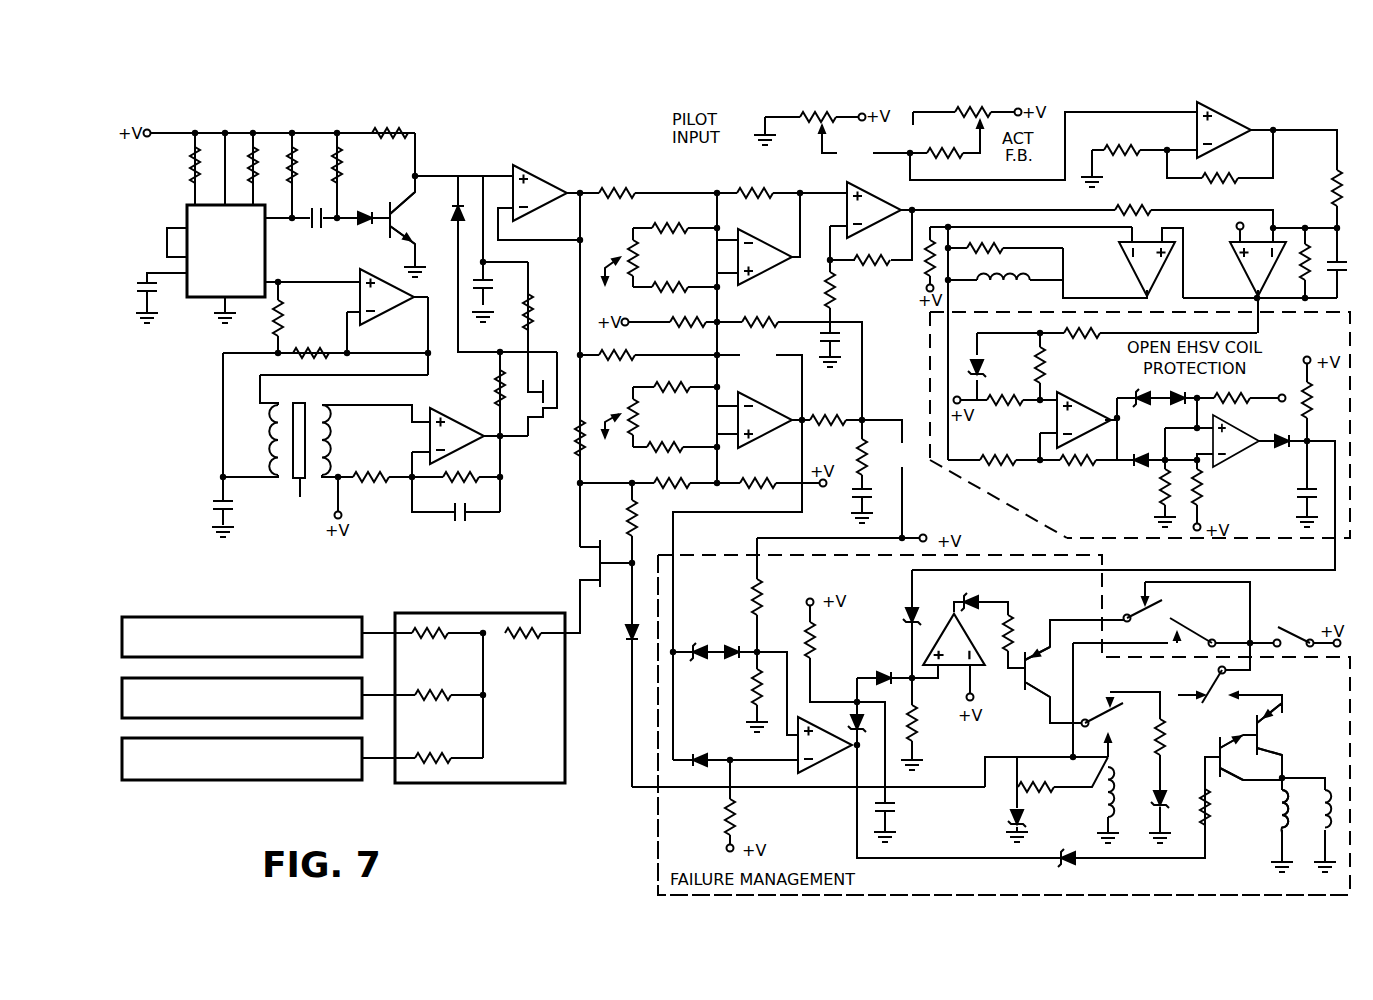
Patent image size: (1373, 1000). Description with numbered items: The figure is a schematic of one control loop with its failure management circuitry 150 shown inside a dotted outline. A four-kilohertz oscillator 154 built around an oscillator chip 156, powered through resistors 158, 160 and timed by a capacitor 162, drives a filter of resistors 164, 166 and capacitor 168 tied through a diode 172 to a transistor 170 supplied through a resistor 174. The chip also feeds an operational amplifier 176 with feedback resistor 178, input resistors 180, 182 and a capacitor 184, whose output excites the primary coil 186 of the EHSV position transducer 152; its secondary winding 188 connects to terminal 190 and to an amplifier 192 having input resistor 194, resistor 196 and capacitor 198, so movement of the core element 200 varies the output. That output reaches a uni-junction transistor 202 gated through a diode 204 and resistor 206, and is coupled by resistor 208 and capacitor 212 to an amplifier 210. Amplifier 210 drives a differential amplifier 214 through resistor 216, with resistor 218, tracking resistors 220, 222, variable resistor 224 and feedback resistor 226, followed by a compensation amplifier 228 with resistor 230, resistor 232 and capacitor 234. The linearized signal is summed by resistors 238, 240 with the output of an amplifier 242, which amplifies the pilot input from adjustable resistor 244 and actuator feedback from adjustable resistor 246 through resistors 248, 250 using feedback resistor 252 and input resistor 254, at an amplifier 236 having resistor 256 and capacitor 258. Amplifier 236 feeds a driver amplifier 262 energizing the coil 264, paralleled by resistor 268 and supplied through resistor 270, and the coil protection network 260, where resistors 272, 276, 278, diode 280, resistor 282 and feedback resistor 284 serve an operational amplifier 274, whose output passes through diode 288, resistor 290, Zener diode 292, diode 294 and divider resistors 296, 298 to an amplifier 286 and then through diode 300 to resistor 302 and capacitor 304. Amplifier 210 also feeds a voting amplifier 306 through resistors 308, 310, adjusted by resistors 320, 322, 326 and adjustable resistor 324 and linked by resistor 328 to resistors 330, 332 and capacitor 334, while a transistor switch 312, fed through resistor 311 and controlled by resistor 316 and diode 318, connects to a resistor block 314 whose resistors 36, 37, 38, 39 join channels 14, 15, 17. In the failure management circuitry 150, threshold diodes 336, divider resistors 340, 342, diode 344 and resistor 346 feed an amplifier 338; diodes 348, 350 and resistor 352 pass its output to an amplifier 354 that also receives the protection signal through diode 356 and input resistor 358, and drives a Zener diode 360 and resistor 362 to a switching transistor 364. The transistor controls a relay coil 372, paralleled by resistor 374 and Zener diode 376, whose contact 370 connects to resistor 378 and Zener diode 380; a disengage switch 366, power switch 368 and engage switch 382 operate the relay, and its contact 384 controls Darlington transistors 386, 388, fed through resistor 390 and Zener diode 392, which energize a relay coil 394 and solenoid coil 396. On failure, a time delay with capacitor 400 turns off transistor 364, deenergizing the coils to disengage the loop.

The failure management circuitry 150 is at (658, 828).
The electrohydraulic servo valve position transducer 152 is at (280, 496).
The 4-kilohertz oscillator 154 is at (270, 128).
The oscillator chip 156 is at (197, 300).
The resistor 158 is at (190, 170).
The resistor 160 is at (253, 150).
The capacitor 162 is at (147, 280).
The resistor 164 is at (295, 160).
The resistor 166 is at (340, 160).
The capacitor 168 is at (316, 230).
The transistor 170 is at (392, 212).
The diode 172 is at (365, 205).
The resistor 174 is at (392, 130).
The operational amplifier 176 is at (387, 236).
The feedback resistor 178 is at (397, 316).
The input resistor 180 is at (320, 339).
The input resistor 182 is at (282, 315).
The capacitor 184 is at (218, 500).
The primary coil 186 is at (272, 433).
The secondary winding 188 is at (326, 435).
The terminal 190 is at (342, 517).
The operational amplifier 192 is at (451, 415).
The input resistor 194 is at (371, 475).
The resistor 196 is at (483, 463).
The capacitor 198 is at (455, 524).
The core element 200 is at (307, 403).
The uni-junction transistor 202 is at (552, 435).
The diode 204 is at (460, 200).
The resistor 206 is at (497, 386).
The resistor 208 is at (531, 306).
The operational amplifier 210 is at (546, 180).
The capacitor 212 is at (492, 278).
The differential amplifier 214 is at (768, 243).
The input resistor 216 is at (613, 189).
The input resistor 218 is at (690, 326).
The resistor 220 is at (672, 225).
The resistor 222 is at (672, 284).
The variable resistor 224 is at (630, 245).
The resistor 226 is at (757, 188).
The amplifier 228 is at (880, 206).
The feedback resistor 230 is at (869, 257).
The resistor 232 is at (836, 300).
The capacitor 234 is at (845, 340).
The amplifier 236 is at (1246, 270).
The resistor 238 is at (1150, 208).
The resistor 240 is at (1334, 190).
The amplifier 242 is at (1232, 128).
The adjustable resistor 244 is at (771, 140).
The adjustable resistor 246 is at (966, 116).
The resistor 248 is at (836, 120).
The resistor 250 is at (948, 157).
The feedback resistor 252 is at (1218, 175).
The input resistor 254 is at (1122, 145).
The resistor 256 is at (1300, 250).
The capacitor 258 is at (1333, 280).
The electrohydraulic servo valve coil protection network 260 is at (962, 494).
The driver amplifier 262 is at (1131, 265).
The coil 264 is at (998, 280).
The resistor 268 is at (985, 245).
The resistor 270 is at (925, 268).
The resistor 272 is at (1005, 466).
The operational amplifier 274 is at (1083, 405).
The resistor 276 is at (1102, 332).
The resistor 278 is at (1046, 362).
The voltage protection diode 280 is at (982, 372).
The resistor 282 is at (1003, 406).
The resistor 284 is at (1080, 466).
The amplifier 286 is at (1245, 452).
The diode 288 is at (1140, 468).
The resistor 290 is at (1203, 492).
The Zener diode 292 is at (1146, 408).
The diode 294 is at (1182, 392).
The resistor 296 is at (1241, 403).
The resistor 298 is at (1160, 505).
The diode 300 is at (1282, 452).
The resistor 302 is at (1304, 395).
The capacitor 304 is at (1300, 498).
The amplifier 306 is at (765, 405).
The resistor 308 is at (622, 358).
The resistor 310 is at (655, 480).
The resistor 311 is at (584, 420).
The transistor switch 312 is at (596, 570).
The resistor block 314 is at (456, 613).
The resistor 316 is at (638, 516).
The diode 318 is at (626, 640).
The resistor 320 is at (653, 385).
The resistor 322 is at (675, 445).
The adjustable resistor 324 is at (640, 410).
The resistor 326 is at (760, 470).
The resistor 328 is at (824, 417).
The resistor 330 is at (765, 319).
The resistor 332 is at (858, 450).
The capacitor 334 is at (856, 505).
The threshold diodes 336 is at (700, 640).
The amplifier 338 is at (811, 775).
The resistor 340 is at (750, 595).
The resistor 342 is at (750, 685).
The diode 344 is at (695, 750).
The resistor 346 is at (726, 805).
The diode 348 is at (852, 715).
The diode 350 is at (880, 672).
The resistor 352 is at (818, 640).
The amplifier 354 is at (954, 645).
The diode 356 is at (905, 610).
The input resistor 358 is at (920, 730).
The Zener diode 360 is at (985, 599).
The resistor 362 is at (1013, 625).
The switching transistor 364 is at (1036, 696).
The momentary contact switch 366 is at (1163, 602).
The power switch 368 is at (1300, 628).
The single pole-two position contact 370 is at (1105, 700).
The relay coil 372 is at (1104, 800).
The resistor 374 is at (1018, 785).
The Zener diode 376 is at (1010, 820).
The resistor 378 is at (1166, 730).
The Zener diode 380 is at (1168, 790).
The engage switch 382 is at (1195, 625).
The single pole-two position switch 384 is at (1212, 683).
The transistor 386 is at (1262, 732).
The transistor 388 is at (1235, 782).
The resistor 390 is at (1210, 812).
The Zener diode 392 is at (1076, 862).
The relay coil 394 is at (1275, 832).
The solenoid coil 396 is at (1328, 790).
The capacitor 400 is at (891, 809).
The resistor 36 is at (428, 640).
The resistor 37 is at (433, 702).
The resistor 38 is at (523, 642).
The resistor 39 is at (436, 752).
The channel 15 is at (307, 648).
The channel 14 is at (307, 709).
The channel 17 is at (307, 770).